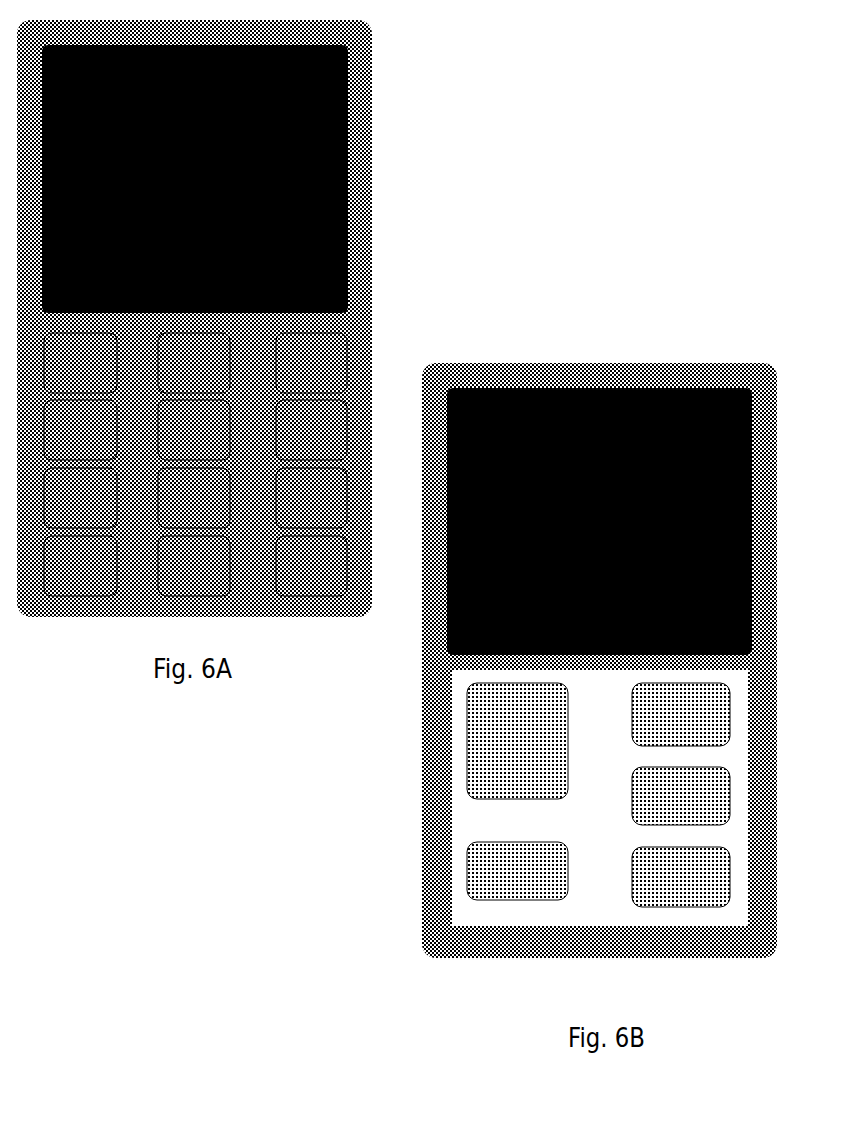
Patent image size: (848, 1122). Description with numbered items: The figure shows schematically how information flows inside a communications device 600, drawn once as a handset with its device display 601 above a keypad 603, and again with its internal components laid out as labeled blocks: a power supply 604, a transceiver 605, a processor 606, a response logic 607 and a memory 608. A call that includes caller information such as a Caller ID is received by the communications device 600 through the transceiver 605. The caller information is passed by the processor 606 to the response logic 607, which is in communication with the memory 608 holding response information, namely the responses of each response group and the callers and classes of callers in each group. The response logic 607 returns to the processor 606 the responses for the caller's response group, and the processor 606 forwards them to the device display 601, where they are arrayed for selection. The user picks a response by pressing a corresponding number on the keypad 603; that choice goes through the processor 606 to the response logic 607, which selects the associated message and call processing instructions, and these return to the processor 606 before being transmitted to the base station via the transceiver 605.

In FIG. 6A, the communications device 600 is at (370, 82).
In FIG. 6B, the communications device 600 is at (493, 362).
In FIG. 6A, the device display 601 is at (352, 205).
In FIG. 6A, the keypad 603 is at (162, 517).
In FIG. 6B, the power supply 604 is at (465, 710).
In FIG. 6B, the transceiver 605 is at (472, 897).
In FIG. 6B, the processor 606 is at (707, 707).
In FIG. 6B, the response logic 607 is at (715, 800).
In FIG. 6B, the memory 608 is at (703, 905).